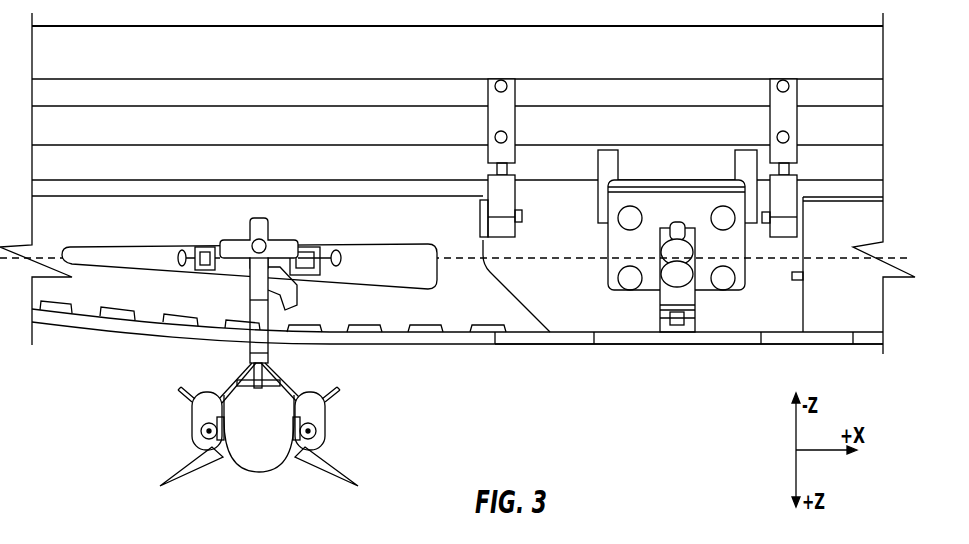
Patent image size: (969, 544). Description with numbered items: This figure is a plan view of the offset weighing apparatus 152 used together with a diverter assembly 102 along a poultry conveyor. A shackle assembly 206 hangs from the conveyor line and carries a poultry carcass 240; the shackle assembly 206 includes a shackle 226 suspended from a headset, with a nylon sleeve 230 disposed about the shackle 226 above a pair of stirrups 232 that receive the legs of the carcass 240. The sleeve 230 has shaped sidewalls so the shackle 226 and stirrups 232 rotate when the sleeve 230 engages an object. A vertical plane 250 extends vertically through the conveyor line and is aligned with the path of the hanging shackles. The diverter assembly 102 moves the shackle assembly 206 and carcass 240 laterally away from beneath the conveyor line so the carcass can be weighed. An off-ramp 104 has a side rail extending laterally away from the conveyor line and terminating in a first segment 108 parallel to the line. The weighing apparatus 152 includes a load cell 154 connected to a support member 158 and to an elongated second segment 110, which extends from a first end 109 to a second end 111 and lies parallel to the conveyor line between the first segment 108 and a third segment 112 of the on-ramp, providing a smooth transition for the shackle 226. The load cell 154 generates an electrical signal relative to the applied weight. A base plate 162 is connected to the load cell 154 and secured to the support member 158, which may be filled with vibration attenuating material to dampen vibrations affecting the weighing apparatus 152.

The diverter assembly 102 is at (444, 374).
The off-ramp 104 is at (88, 354).
The first segment 108 is at (495, 344).
The first end 109 is at (612, 344).
The second segment 110 is at (705, 344).
The second end 111 is at (755, 338).
The third segment 112 is at (793, 344).
The weighing apparatus 152 is at (677, 357).
The load cell 154 is at (660, 236).
The support member 158 is at (558, 95).
The base plate 162 is at (662, 205).
The shackle assembly 206 is at (302, 225).
The shackle 226 is at (222, 364).
The sleeve 230 is at (245, 322).
The stirrups 232 is at (185, 397).
The poultry carcass 240 is at (260, 462).
The vertical plane 250 is at (80, 250).